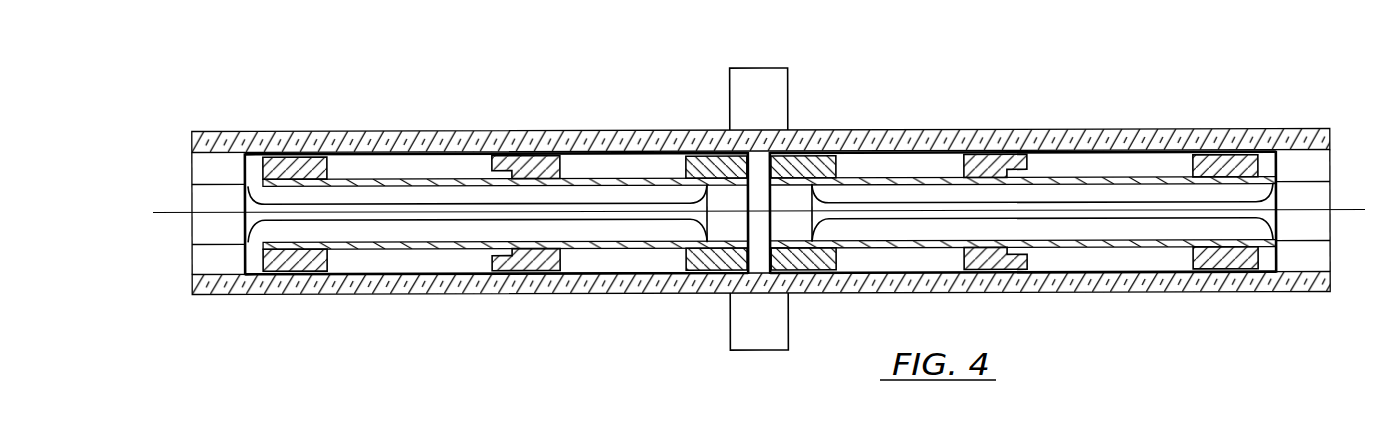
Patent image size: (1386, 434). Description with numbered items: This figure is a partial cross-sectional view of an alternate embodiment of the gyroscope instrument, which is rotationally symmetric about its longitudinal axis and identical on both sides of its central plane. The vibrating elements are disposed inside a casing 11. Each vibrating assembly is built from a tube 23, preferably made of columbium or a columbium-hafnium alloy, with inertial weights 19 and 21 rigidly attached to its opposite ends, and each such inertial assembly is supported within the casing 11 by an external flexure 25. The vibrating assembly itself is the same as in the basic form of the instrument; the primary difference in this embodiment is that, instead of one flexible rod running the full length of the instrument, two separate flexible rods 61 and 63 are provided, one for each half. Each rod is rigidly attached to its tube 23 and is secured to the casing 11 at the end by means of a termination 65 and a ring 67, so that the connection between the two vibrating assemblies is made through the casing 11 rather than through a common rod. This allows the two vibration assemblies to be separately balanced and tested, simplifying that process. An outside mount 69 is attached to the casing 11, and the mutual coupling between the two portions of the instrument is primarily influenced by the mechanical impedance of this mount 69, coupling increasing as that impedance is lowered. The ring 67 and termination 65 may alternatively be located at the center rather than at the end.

The casing 11 is at (348, 129).
The inertial weight 19 is at (282, 165).
The inertial weight 21 is at (698, 158).
The tube 23 is at (385, 178).
The external flexure 25 is at (532, 160).
The flexible rod 61 is at (420, 212).
The flexible rod 63 is at (890, 207).
The termination 65 is at (192, 216).
The ring 67 is at (192, 262).
The outside mount 69 is at (781, 88).